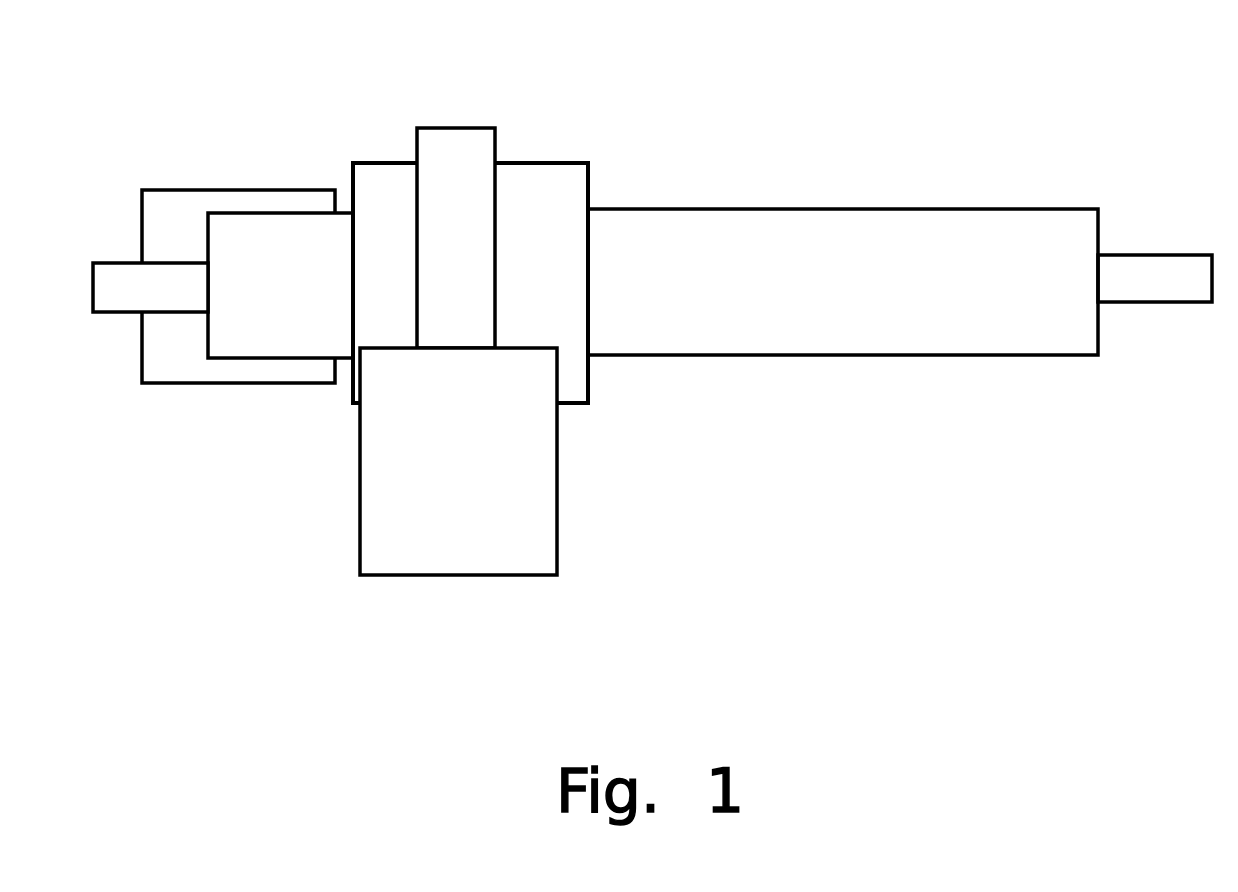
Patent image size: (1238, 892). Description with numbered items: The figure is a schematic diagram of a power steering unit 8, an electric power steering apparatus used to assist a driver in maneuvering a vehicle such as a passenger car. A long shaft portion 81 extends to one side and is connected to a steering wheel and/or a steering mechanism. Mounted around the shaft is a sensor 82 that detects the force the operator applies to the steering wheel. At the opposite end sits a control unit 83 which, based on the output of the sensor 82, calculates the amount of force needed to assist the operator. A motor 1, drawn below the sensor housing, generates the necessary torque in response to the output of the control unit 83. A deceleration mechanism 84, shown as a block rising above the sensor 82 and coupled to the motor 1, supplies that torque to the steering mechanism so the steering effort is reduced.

The power steering unit 8 is at (143, 87).
The motor 1 is at (557, 460).
The shaft portion 81 is at (1018, 204).
The sensor 82 is at (555, 160).
The control unit 83 is at (197, 383).
The deceleration mechanism 84 is at (450, 127).